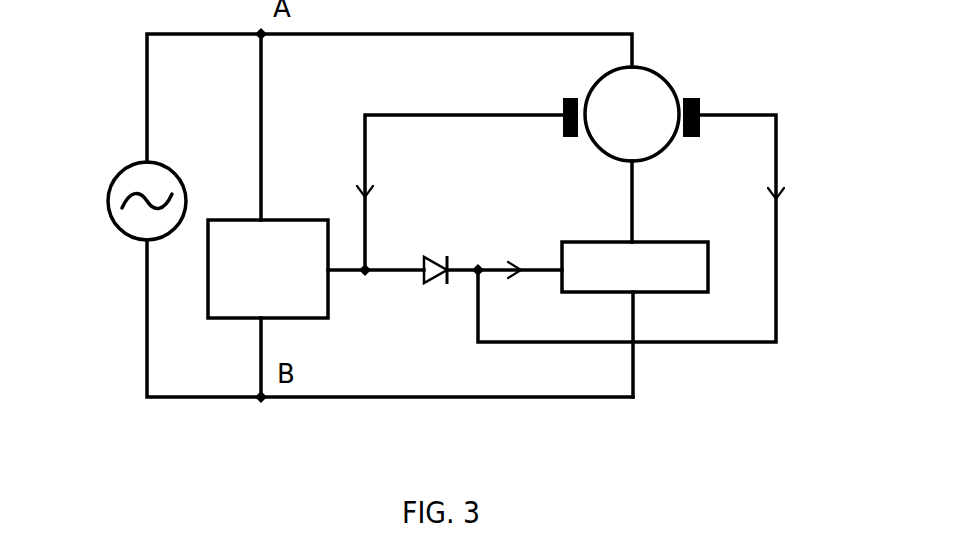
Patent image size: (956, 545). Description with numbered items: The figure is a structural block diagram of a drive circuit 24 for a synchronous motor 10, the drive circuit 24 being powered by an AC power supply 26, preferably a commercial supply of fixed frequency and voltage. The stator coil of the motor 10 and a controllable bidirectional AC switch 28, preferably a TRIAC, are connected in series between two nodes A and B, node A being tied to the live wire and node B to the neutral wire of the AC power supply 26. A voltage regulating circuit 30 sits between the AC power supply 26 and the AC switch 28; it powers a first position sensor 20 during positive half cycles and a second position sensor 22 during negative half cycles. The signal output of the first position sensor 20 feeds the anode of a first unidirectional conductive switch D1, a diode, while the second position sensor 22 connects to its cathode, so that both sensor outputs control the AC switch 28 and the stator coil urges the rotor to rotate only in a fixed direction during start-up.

The motor 10 is at (647, 70).
The first position sensor 20 is at (563, 104).
The second position sensor 22 is at (700, 97).
The drive circuit 24 is at (702, 377).
The AC power supply 26 is at (125, 163).
The controllable bidirectional AC switch 28 is at (663, 242).
The voltage regulating circuit 30 is at (305, 318).
The first unidirectional conductive switch D1 is at (439, 253).